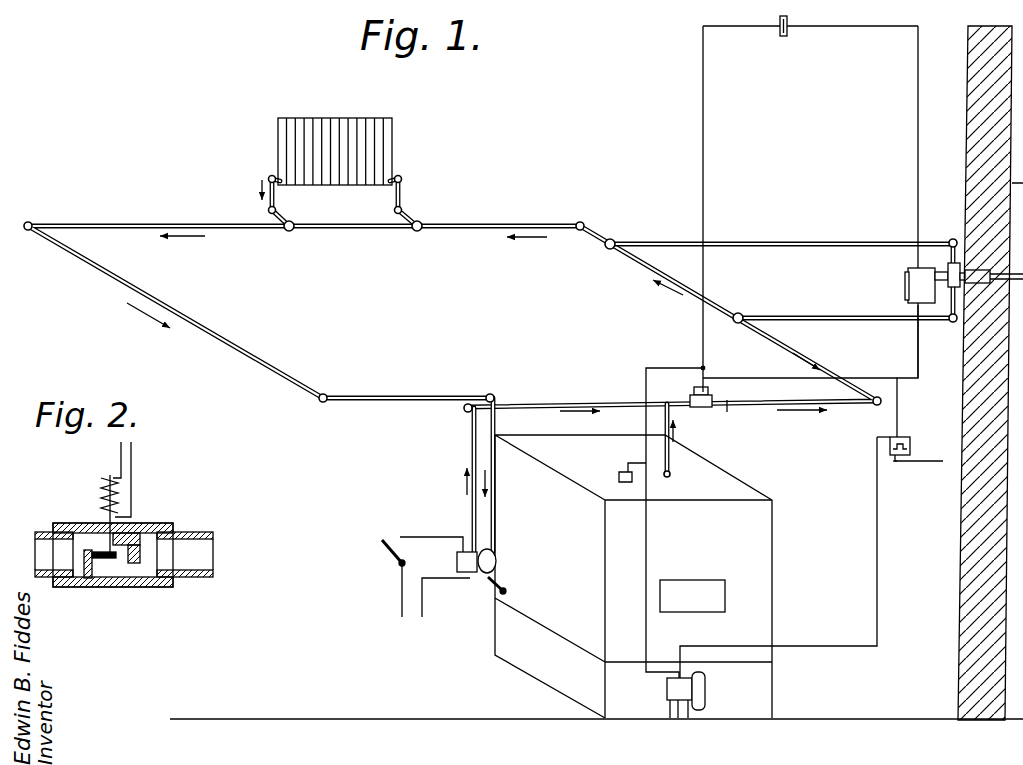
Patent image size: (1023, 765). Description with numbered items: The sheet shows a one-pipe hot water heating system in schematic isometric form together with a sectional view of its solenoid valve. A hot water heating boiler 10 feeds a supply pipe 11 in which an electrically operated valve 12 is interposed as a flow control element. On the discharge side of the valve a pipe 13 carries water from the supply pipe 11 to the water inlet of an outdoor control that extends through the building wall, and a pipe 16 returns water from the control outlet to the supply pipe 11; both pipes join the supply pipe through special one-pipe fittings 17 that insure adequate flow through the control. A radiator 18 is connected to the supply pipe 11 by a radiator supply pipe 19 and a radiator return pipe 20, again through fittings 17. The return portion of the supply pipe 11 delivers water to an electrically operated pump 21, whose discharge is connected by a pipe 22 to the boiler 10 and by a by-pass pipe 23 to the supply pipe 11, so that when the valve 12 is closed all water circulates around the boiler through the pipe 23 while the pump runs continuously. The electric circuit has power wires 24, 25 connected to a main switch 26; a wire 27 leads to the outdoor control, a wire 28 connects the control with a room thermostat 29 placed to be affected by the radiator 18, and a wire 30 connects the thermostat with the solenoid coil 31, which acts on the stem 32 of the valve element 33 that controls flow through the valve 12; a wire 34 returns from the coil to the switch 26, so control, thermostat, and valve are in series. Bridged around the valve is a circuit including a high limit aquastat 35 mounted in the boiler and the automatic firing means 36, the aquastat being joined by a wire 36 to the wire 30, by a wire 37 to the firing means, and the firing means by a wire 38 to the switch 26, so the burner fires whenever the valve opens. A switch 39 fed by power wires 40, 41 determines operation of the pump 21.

In FIG. 1, the hot water heating boiler 10 is at (772, 557).
In FIG. 1, the supply pipe 11 is at (669, 463).
In FIG. 2, the supply pipe 11 is at (213, 533).
In FIG. 1, the electrically operated valve 12 is at (712, 393).
In FIG. 2, the electrically operated valve 12 is at (166, 516).
In FIG. 1, the pipe 13 is at (820, 322).
In FIG. 1, the pipe 16 is at (822, 240).
In FIG. 1, the fittings 17 is at (291, 232).
In FIG. 1, the radiator 18 is at (395, 138).
In FIG. 1, the radiator supply pipe 19 is at (407, 199).
In FIG. 1, the radiator return pipe 20 is at (278, 200).
In FIG. 1, the electrically operated pump 21 is at (497, 557).
In FIG. 1, the pipe 22 is at (500, 588).
In FIG. 1, the by-pass pipe 23 is at (472, 428).
In FIG. 1, the power wire 24 is at (920, 449).
In FIG. 1, the power wire 25 is at (898, 462).
In FIG. 1, the main switch 26 is at (920, 424).
In FIG. 1, the wire 27 is at (919, 350).
In FIG. 1, the wire 28 is at (919, 197).
In FIG. 1, the room thermostat 29 is at (783, 38).
In FIG. 1, the wire 30 is at (704, 144).
In FIG. 2, the wire 30 is at (120, 447).
In FIG. 2, the solenoid coil 31 is at (100, 493).
In FIG. 2, the stem 32 is at (103, 517).
In FIG. 2, the valve element 33 is at (118, 580).
In FIG. 1, the wire 34 is at (742, 366).
In FIG. 2, the wire 34 is at (132, 468).
In FIG. 1, the aquastat 35 is at (620, 480).
In FIG. 1, the firing means 36 is at (644, 424).
In FIG. 1, the wire 37 is at (645, 543).
In FIG. 1, the wire 38 is at (805, 644).
In FIG. 1, the switch 39 is at (386, 550).
In FIG. 1, the power wire 40 is at (399, 609).
In FIG. 1, the power wire 41 is at (423, 608).